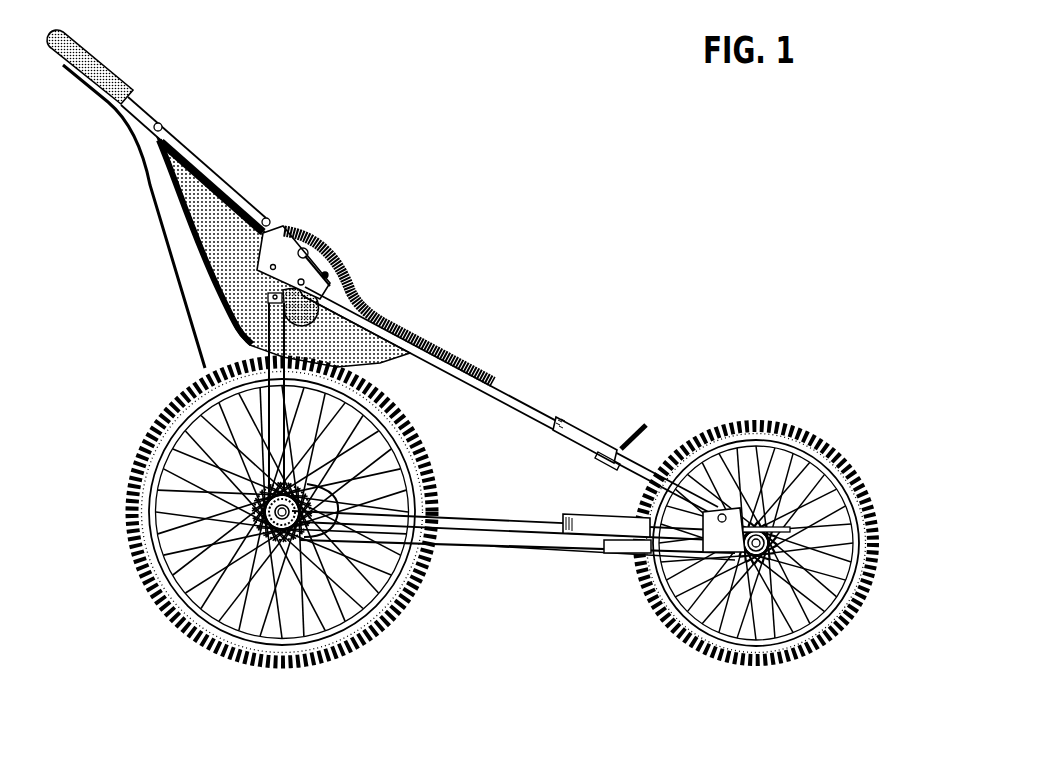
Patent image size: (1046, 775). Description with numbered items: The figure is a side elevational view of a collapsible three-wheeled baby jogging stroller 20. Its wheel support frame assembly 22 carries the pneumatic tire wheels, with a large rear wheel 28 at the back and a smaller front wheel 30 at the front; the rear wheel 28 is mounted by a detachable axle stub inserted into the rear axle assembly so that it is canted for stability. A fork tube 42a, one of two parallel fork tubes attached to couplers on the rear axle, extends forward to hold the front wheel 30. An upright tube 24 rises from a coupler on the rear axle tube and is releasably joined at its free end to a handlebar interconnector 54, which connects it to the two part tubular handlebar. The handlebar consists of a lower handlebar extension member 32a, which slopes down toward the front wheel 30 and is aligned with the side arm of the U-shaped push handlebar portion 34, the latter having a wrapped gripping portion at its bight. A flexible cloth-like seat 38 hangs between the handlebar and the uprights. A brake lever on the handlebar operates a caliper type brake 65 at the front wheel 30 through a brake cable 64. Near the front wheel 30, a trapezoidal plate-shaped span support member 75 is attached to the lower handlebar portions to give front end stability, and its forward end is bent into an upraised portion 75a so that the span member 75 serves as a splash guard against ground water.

The jogging stroller 20 is at (430, 248).
The wheel support frame assembly 22 is at (493, 551).
The upright tube 24 is at (273, 328).
The rear wheel 28 is at (412, 603).
The front wheel 30 is at (790, 422).
The lower handlebar extension member 32a is at (536, 400).
The push handlebar portion 34 is at (108, 51).
The seat 38 is at (190, 245).
The fork tube 42a is at (540, 516).
The handlebar interconnector 54 is at (270, 222).
The brake cable 64 is at (183, 287).
The caliper type brake 65 is at (617, 555).
The span support member 75 is at (606, 423).
The upraised portion 75a is at (637, 422).